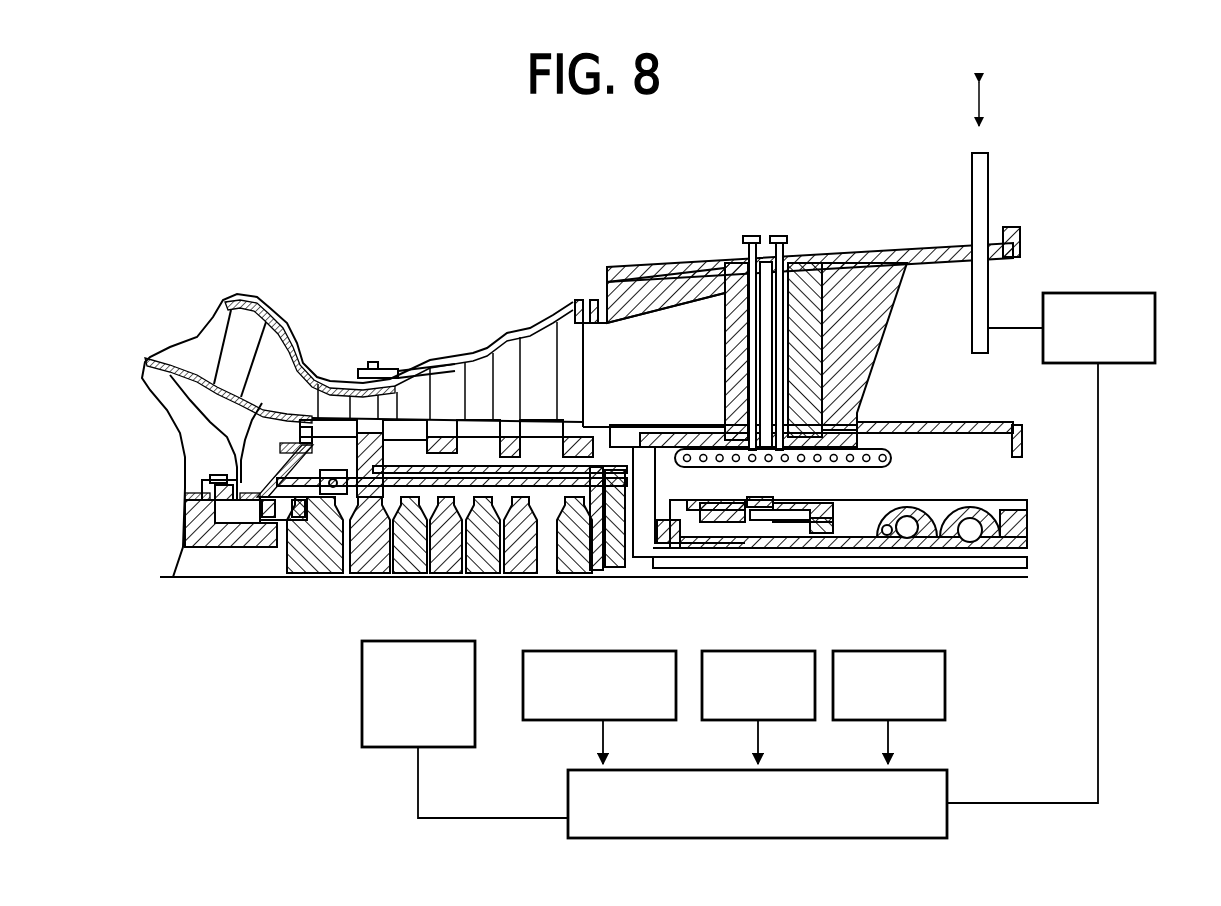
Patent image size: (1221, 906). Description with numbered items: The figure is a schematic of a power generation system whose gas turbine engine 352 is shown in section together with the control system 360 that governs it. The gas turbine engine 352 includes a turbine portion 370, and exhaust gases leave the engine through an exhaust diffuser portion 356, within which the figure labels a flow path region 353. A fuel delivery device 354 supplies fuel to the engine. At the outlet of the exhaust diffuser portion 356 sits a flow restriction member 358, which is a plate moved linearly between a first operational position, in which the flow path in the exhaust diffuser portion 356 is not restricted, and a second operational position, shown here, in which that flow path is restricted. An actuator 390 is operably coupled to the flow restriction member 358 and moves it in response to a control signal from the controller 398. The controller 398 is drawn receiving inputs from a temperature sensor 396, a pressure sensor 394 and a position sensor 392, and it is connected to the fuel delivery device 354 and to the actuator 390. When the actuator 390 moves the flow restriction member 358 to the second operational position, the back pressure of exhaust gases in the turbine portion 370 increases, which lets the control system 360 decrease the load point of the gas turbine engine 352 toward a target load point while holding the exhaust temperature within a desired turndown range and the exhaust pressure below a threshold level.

The gas turbine engine 352 is at (307, 290).
The combustion chamber 353 is at (700, 365).
The fuel delivery device 354 is at (362, 690).
The exhaust diffuser portion 356 is at (962, 228).
The flow restriction member 358 is at (988, 183).
The control system 360 is at (1018, 663).
The turbine portion 370 is at (378, 367).
The actuator 390 is at (1124, 363).
The position sensor 392 is at (945, 710).
The pressure sensor 394 is at (723, 722).
The temperature sensor 396 is at (561, 722).
The controller 398 is at (947, 838).